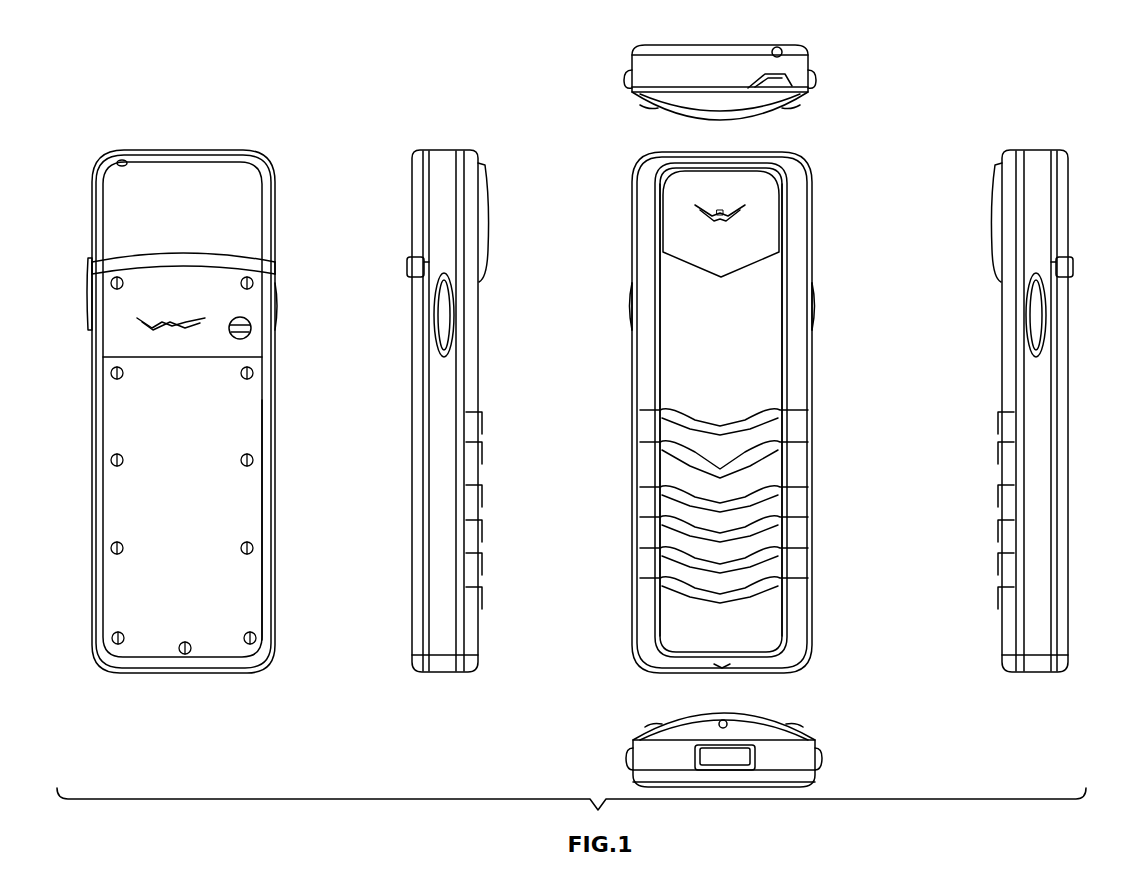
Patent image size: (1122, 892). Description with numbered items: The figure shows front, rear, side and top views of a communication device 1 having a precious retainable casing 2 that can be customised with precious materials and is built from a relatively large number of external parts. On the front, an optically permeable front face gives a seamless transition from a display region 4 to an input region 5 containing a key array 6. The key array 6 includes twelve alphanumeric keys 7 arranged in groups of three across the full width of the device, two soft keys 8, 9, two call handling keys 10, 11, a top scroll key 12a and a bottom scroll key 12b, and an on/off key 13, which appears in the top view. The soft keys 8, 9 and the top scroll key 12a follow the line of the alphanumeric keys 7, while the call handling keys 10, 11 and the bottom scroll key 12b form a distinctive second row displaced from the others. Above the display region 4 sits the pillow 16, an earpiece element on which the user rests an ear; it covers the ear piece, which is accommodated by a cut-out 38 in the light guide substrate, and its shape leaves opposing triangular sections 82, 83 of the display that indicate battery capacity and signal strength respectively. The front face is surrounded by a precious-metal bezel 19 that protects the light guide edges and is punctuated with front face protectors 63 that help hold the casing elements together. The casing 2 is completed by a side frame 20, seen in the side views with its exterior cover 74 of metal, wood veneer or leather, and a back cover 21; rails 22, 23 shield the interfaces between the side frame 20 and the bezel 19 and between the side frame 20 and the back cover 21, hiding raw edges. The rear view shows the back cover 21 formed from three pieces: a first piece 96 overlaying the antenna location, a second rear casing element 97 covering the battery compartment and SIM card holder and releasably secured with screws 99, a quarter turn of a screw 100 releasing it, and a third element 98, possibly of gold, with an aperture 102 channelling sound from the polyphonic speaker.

The communication device 1 is at (880, 153).
The casing 2 is at (183, 150).
The display region 4 is at (713, 352).
The input region 5 is at (713, 467).
The key array 6 is at (719, 494).
The alphanumeric keys 7 is at (832, 485).
The soft key 8 is at (662, 410).
The soft key 9 is at (780, 410).
The call handling key 10 is at (700, 457).
The call handling key 11 is at (745, 455).
The top scroll key 12a is at (740, 429).
The bottom scroll key 12b is at (745, 472).
The on/off key 13 is at (772, 80).
The pillow 16 is at (488, 188).
The bezel 19 is at (475, 360).
The side frame 20 is at (441, 662).
The back cover 21 is at (130, 505).
The rail 22 is at (460, 150).
The rail 23 is at (423, 150).
The cut-out 38 is at (690, 207).
The front face protectors 63 is at (482, 487).
The exterior cover 74 is at (432, 454).
The triangular section 82 is at (773, 292).
The triangular section 83 is at (672, 292).
The first piece 96 is at (248, 206).
The second rear casing element 97 is at (257, 497).
The third element of the rear casing 98 is at (255, 349).
The screws 99 is at (112, 548).
The screw 100 is at (250, 325).
The aperture 102 is at (150, 325).